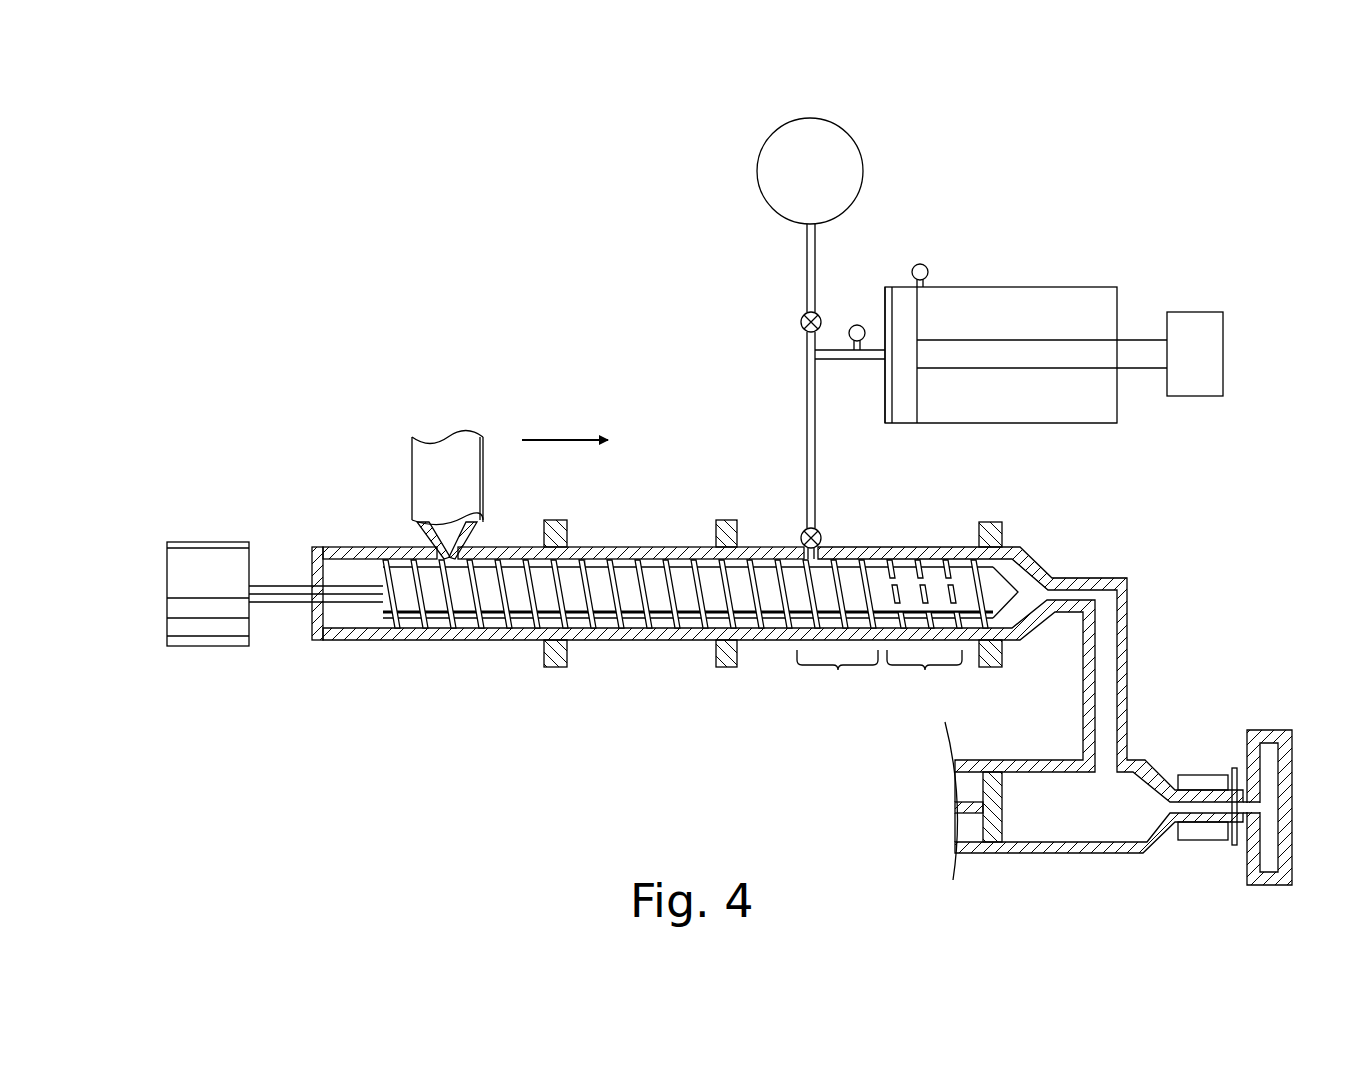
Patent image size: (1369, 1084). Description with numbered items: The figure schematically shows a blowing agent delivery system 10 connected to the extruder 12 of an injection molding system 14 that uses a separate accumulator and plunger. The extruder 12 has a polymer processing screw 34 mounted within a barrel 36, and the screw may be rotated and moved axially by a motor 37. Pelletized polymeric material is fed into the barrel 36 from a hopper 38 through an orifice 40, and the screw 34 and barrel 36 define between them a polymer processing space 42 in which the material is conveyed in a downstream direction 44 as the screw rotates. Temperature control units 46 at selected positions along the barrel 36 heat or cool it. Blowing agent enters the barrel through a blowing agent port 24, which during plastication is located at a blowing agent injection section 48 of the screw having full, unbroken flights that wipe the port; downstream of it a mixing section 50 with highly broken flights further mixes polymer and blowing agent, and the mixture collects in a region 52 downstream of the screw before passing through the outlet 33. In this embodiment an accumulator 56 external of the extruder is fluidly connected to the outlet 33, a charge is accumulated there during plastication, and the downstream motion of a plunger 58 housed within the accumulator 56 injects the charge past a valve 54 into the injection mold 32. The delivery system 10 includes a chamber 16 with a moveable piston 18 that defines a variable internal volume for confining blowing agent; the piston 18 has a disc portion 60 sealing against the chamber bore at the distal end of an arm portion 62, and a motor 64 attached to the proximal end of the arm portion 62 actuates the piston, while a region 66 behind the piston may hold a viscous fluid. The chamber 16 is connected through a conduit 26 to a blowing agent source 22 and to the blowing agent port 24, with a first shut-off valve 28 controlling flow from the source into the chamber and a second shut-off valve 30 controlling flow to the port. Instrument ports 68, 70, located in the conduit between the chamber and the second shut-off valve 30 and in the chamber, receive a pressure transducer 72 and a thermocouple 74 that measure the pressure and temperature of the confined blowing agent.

The blowing agent delivery system 10 is at (950, 198).
The extruder 12 is at (518, 356).
The injection molding system 14 is at (611, 789).
The chamber 16 is at (985, 287).
The piston 18 is at (897, 425).
The blowing agent source 22 is at (845, 130).
The blowing agent port 24 is at (818, 558).
The conduit 26 is at (805, 268).
The first shut-off valve 28 is at (800, 325).
The second shut-off valve 30 is at (821, 536).
The injection mold 32 is at (1270, 735).
The outlet 33 is at (1075, 595).
The polymer processing screw 34 is at (668, 565).
The barrel 36 is at (432, 645).
The motor 37 is at (205, 648).
The hopper 38 is at (442, 460).
The orifice 40 is at (440, 533).
The polymer processing space 42 is at (585, 556).
The downstream direction 44 is at (560, 440).
The temperature control units 46 is at (555, 520).
The blowing agent injection section 48 is at (837, 673).
The mixing section 50 is at (924, 673).
The region 52 is at (1015, 570).
The valve 54 is at (1233, 765).
The accumulator 56 is at (1070, 855).
The plunger 58 is at (1005, 802).
The disc portion 60 is at (919, 323).
The arm portion 62 is at (1140, 338).
The motor 64 is at (1226, 340).
The region 66 is at (1100, 390).
The instrument port 68 is at (876, 350).
The instrument port 70 is at (888, 290).
The pressure transducer 72 is at (855, 324).
The thermocouple 74 is at (927, 268).